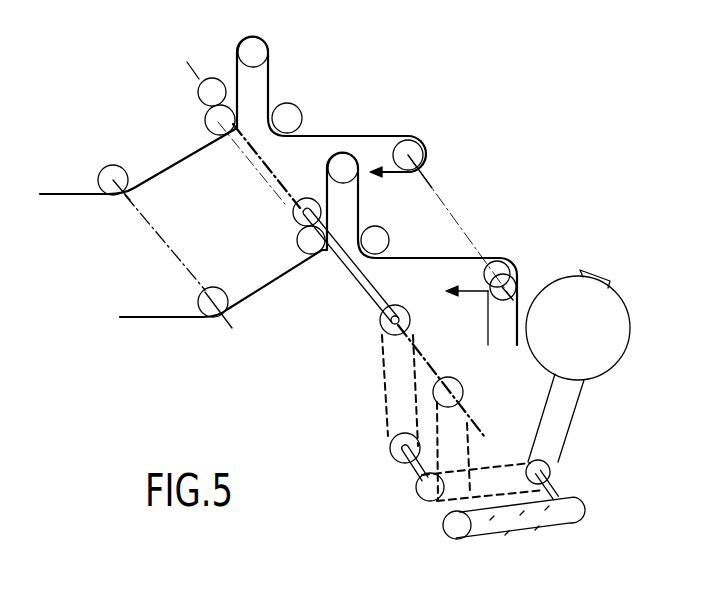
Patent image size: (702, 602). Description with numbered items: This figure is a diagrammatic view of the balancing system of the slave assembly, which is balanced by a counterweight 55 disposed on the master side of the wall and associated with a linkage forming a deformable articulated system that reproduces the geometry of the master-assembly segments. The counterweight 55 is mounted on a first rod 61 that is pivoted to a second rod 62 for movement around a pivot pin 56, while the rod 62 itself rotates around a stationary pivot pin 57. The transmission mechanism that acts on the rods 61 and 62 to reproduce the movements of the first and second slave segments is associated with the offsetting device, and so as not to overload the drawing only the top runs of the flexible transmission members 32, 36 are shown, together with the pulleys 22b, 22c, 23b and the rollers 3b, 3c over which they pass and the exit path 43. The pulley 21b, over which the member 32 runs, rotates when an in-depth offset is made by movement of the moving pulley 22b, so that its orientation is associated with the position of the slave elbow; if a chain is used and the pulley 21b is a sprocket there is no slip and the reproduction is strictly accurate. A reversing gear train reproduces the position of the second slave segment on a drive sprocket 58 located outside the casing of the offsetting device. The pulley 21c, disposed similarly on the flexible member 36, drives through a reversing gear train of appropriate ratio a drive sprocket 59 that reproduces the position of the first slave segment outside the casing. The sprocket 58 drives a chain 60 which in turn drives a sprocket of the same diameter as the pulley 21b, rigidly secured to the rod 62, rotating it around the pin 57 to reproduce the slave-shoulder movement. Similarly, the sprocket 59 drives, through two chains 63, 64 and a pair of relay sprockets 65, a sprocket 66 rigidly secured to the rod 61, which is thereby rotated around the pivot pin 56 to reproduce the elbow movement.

The flexible transmission member 32 is at (80, 192).
The flexible transmission member 36 is at (162, 317).
The pulley 21b is at (205, 115).
The pulley 21c is at (300, 242).
The moving pulley 22b is at (263, 45).
The roller 22c is at (351, 166).
The roller 23b is at (294, 118).
The roller 3b is at (420, 147).
The roller pair 3c is at (502, 262).
The output web path 43 is at (527, 298).
The counterweight 55 is at (593, 344).
The pivot pin 56 is at (558, 486).
The stationary pivot pin 57 is at (470, 540).
The drive sprocket 58 is at (435, 388).
The drive sprocket 59 is at (380, 320).
The chain 60 is at (473, 438).
The first rod 61 is at (575, 397).
The second rod 62 is at (537, 523).
The chain 63 is at (386, 418).
The chain 64 is at (500, 462).
The relay sprockets 65 is at (392, 465).
The sprocket 66 is at (550, 460).